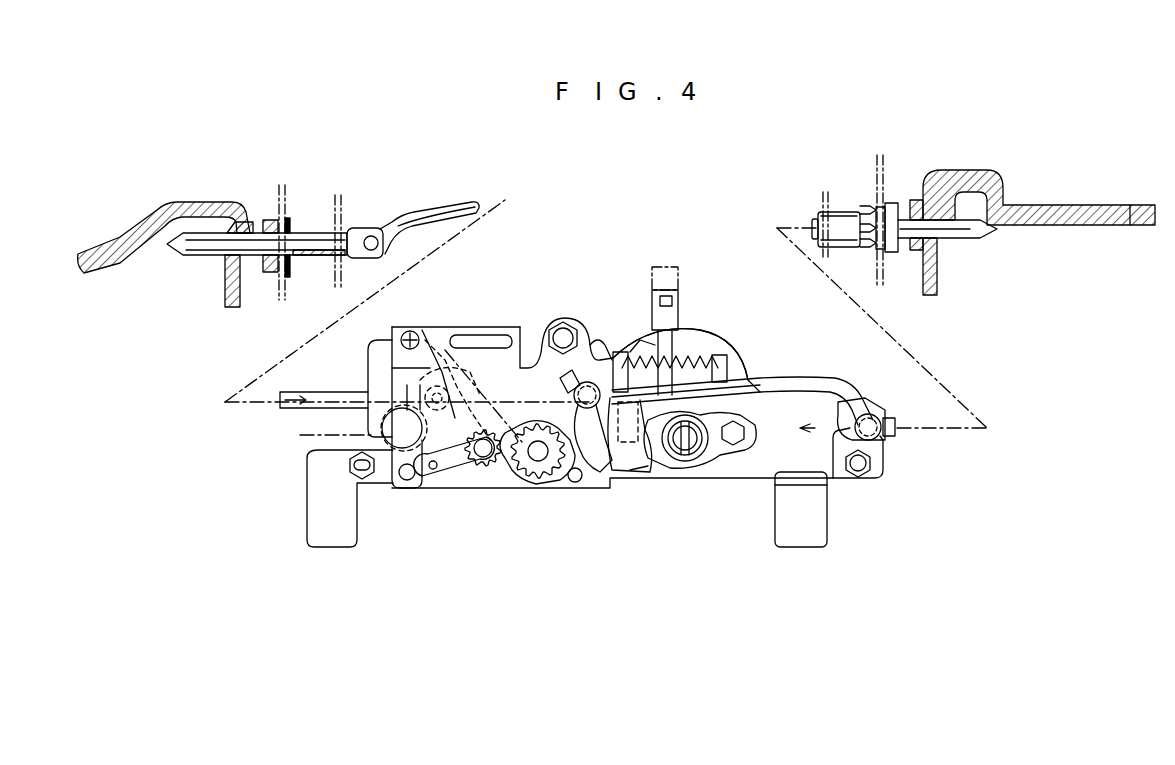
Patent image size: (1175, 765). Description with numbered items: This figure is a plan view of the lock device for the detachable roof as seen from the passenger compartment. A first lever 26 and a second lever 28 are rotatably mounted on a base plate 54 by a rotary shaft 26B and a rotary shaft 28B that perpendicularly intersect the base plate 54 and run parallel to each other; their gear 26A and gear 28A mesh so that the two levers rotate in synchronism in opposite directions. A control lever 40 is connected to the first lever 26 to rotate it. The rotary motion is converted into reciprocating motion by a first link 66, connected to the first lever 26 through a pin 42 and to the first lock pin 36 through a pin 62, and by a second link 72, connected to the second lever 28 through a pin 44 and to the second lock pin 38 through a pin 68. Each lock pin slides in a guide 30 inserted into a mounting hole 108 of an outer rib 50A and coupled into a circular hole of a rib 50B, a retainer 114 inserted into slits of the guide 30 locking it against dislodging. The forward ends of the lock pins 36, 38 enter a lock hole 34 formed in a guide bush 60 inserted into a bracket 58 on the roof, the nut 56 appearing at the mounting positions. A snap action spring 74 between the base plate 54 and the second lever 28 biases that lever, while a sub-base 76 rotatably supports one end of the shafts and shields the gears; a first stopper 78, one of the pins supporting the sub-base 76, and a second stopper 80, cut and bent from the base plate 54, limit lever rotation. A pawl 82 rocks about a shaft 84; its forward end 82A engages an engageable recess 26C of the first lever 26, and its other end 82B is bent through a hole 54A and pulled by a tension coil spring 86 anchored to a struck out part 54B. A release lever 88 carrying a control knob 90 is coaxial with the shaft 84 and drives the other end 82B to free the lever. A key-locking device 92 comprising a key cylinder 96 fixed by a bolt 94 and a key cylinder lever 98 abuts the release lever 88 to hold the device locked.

The first lever 26 is at (536, 420).
The gear 26A is at (510, 465).
The rotary shaft 26B is at (540, 462).
The engageable recess 26C is at (598, 478).
The second lever 28 is at (472, 345).
The gear 28A is at (498, 360).
The rotary shaft 28B is at (436, 488).
The guide 30 is at (322, 263).
The lock hole 34 is at (250, 245).
The first lock pin 36 is at (985, 240).
The second lock pin 38 is at (182, 252).
The control lever 40 is at (300, 435).
The pin 42 is at (592, 340).
The pin 44 is at (445, 355).
The outer rib 50A is at (278, 195).
The rib 50B is at (340, 262).
The base plate 54 is at (740, 352).
The hole 54A is at (612, 355).
The struck out part 54B is at (730, 372).
The mounting nut 56 is at (563, 322).
The bracket 58 is at (153, 220).
The guide bush 60 is at (220, 258).
The pin 62 is at (870, 418).
The first link 66 is at (825, 392).
The pin 68 is at (371, 236).
The second link 72 is at (415, 212).
The snap action spring 74 is at (378, 412).
The sub-base 76 is at (405, 482).
The first stopper 78 is at (576, 483).
The second stopper 80 is at (568, 395).
The pawl 82 is at (650, 480).
The forward end 82A is at (628, 478).
The other end 82B is at (650, 320).
The shaft 84 is at (660, 345).
The tension coil spring 86 is at (705, 352).
The release lever 88 is at (674, 303).
The control knob 90 is at (678, 280).
The key-locking device 92 is at (738, 458).
The bolt 94 is at (745, 440).
The key cylinder 96 is at (705, 420).
The key cylinder lever 98 is at (684, 462).
The mounting hole 108 is at (290, 280).
The retainer 114 is at (291, 220).